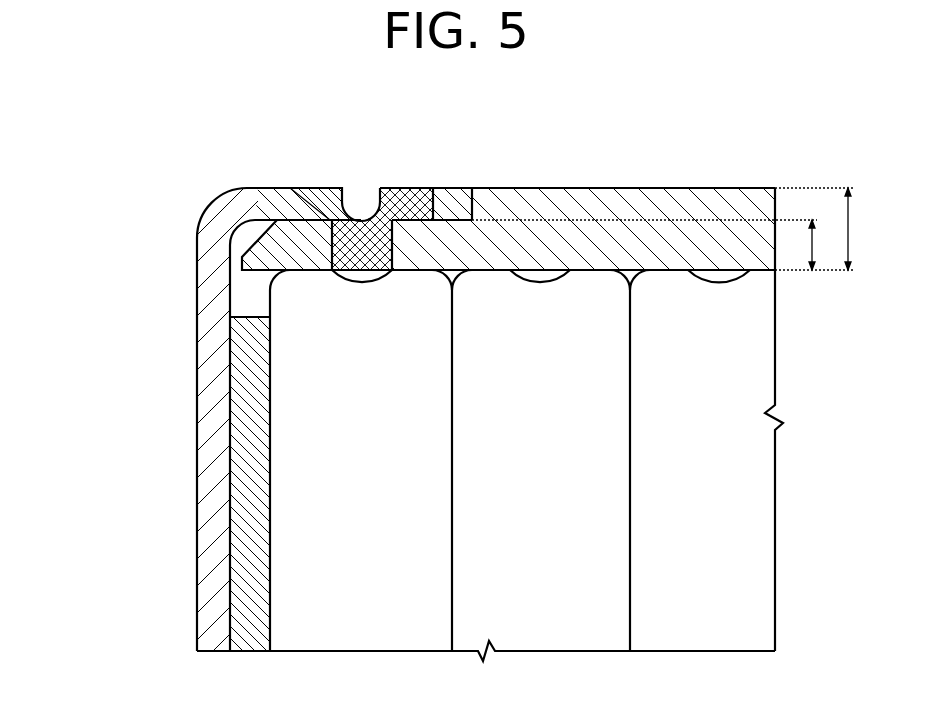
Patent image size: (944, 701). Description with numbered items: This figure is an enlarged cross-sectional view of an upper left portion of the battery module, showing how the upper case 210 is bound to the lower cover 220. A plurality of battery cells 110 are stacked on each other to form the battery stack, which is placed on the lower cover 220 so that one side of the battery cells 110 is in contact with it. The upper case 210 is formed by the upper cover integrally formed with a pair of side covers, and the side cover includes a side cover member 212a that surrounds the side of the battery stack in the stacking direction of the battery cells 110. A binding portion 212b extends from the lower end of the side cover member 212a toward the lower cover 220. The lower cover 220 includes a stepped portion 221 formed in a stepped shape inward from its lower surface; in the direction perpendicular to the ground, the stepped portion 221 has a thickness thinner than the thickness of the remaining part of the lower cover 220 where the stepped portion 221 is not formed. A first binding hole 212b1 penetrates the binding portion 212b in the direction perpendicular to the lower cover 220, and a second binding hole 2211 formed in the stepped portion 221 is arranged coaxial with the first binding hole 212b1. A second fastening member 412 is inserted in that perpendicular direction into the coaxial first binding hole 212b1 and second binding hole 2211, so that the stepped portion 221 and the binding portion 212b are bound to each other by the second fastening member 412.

The battery cells 110 is at (762, 492).
The upper case 210 is at (172, 396).
The side cover member 212a is at (205, 305).
The binding portion 212b is at (240, 232).
The first binding hole 212b1 is at (272, 213).
The lower cover 220 is at (664, 198).
The stepped portion 221 is at (460, 217).
The second binding hole 2211 is at (308, 203).
The second fastening member 412 is at (410, 192).